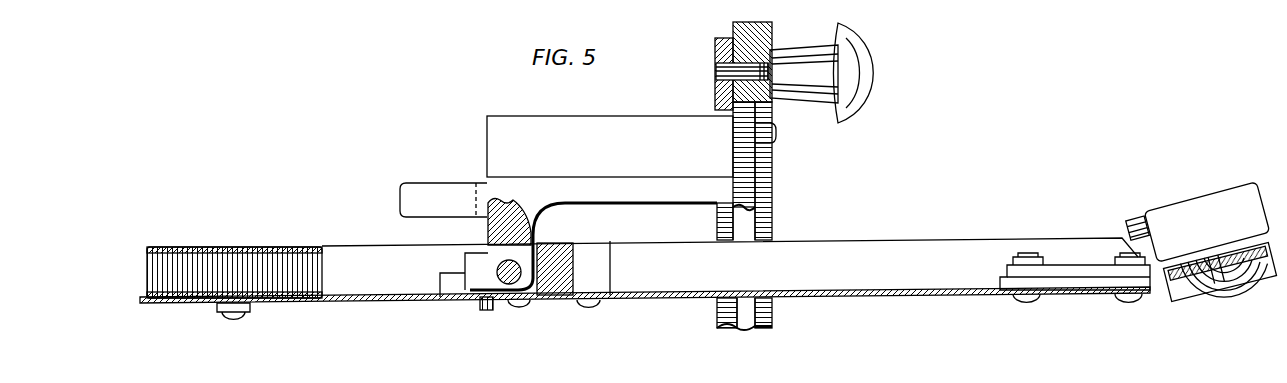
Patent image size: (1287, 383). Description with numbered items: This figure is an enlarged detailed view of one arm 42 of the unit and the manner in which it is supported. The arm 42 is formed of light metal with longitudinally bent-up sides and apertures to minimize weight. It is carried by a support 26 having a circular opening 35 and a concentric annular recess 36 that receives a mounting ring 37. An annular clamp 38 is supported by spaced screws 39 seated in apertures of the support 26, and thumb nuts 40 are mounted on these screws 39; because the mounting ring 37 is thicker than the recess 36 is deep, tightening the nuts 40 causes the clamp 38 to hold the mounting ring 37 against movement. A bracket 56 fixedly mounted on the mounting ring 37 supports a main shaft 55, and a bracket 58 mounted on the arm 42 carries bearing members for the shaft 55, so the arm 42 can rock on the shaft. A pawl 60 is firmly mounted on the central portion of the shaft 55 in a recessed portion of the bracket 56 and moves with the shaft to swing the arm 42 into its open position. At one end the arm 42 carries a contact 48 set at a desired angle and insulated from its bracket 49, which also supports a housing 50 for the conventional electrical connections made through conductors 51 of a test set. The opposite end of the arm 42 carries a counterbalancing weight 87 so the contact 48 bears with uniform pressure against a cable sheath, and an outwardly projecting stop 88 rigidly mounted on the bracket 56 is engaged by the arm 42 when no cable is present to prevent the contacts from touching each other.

The support 26 is at (772, 38).
The circular opening 35 is at (766, 315).
The annular recess 36 is at (770, 113).
The mounting ring 37 is at (757, 178).
The clamp 38 is at (722, 42).
The screws 39 is at (718, 77).
The thumb nuts 40 is at (866, 68).
The arm 42 is at (878, 290).
The contact 48 is at (1228, 297).
The bracket 49 is at (1093, 268).
The housing 50 is at (1222, 200).
The conductors 51 is at (1143, 222).
The main shaft 55 is at (510, 285).
The bracket 56 is at (603, 122).
The bracket 58 is at (564, 287).
The pawl 60 is at (452, 289).
The weight 87 is at (273, 260).
The stop 88 is at (433, 188).